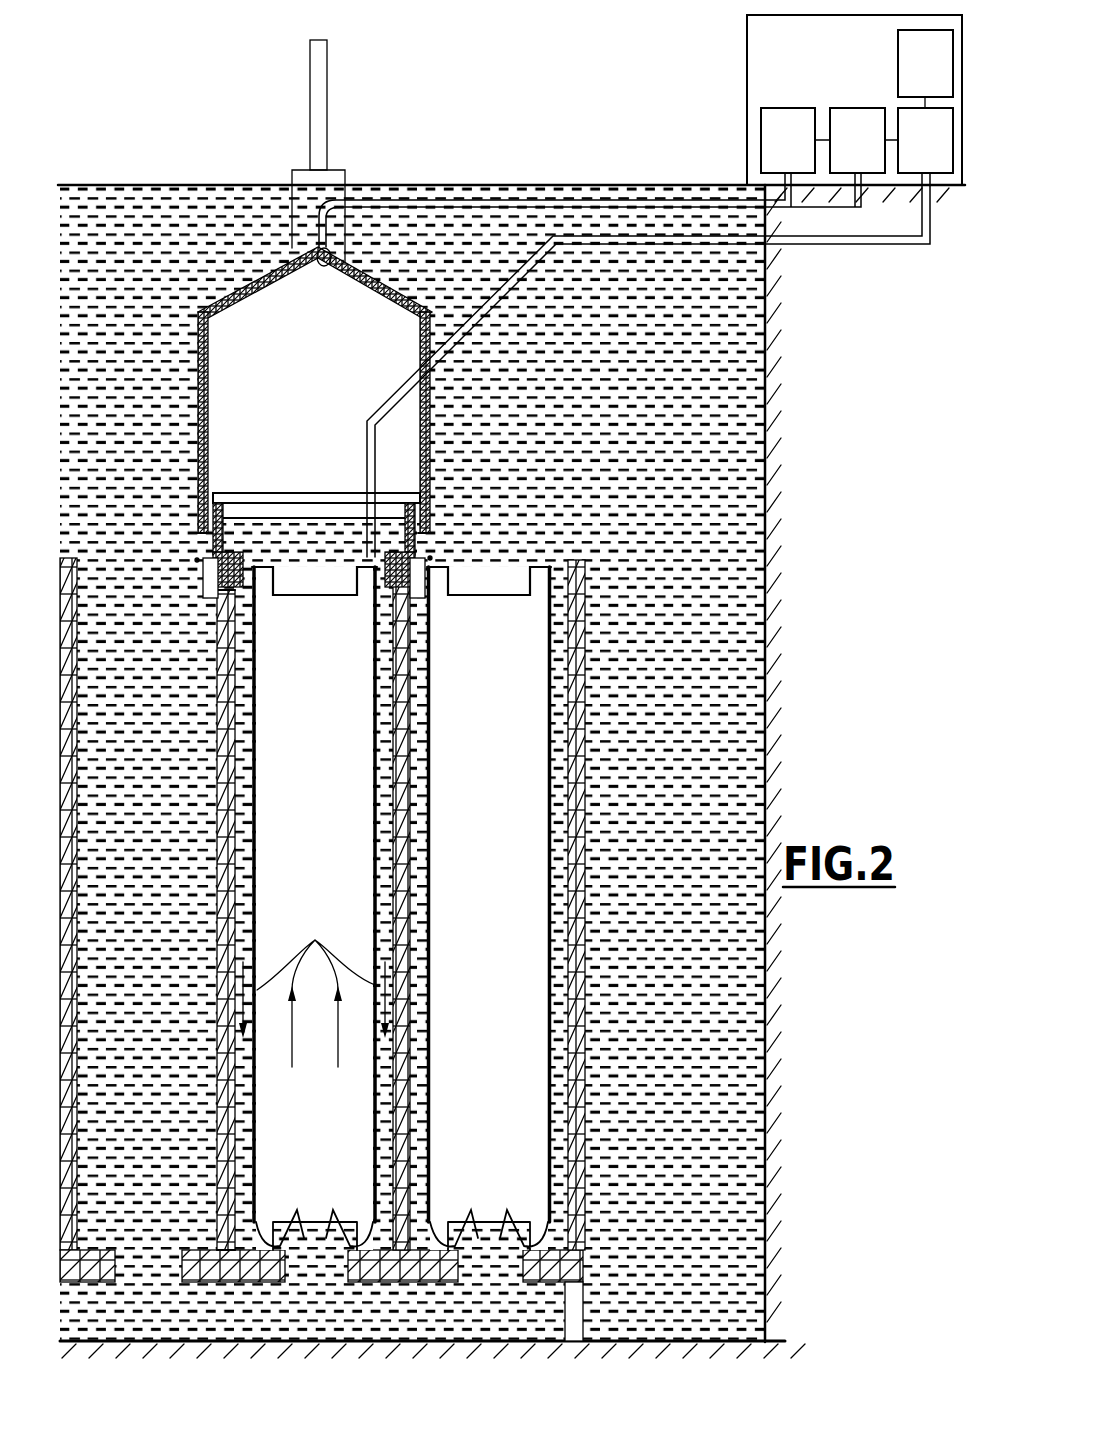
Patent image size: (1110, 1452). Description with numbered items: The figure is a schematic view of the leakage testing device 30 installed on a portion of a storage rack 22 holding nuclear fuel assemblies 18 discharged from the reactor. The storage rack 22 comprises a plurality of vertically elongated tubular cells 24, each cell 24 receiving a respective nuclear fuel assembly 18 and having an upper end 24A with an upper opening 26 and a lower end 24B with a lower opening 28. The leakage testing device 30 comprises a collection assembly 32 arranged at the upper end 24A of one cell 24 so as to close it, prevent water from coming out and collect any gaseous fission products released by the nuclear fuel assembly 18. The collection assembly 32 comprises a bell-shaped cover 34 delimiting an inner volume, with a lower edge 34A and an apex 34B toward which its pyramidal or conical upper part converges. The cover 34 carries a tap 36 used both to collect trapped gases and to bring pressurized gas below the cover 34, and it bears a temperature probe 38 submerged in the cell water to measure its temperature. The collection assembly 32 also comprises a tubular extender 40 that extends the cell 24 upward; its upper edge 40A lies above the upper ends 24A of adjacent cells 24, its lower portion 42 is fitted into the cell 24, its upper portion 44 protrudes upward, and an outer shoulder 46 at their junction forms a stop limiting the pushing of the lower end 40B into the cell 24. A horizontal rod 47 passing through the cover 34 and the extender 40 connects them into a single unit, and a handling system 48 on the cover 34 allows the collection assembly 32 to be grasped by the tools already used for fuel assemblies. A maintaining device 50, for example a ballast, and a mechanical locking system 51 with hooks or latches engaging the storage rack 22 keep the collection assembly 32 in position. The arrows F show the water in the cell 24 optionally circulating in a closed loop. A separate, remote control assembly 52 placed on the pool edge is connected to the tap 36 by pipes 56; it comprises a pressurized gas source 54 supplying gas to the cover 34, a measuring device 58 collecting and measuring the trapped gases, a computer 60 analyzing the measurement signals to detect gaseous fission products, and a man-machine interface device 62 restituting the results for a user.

The nuclear fuel assembly 18 is at (258, 1050).
The storage rack 22 is at (608, 1202).
The tubular cell 24 is at (225, 716).
The upper end 24A is at (207, 573).
The lower end 24B is at (283, 1262).
The upper opening 26 is at (305, 552).
The lower opening 28 is at (295, 1262).
The leakage testing device 30 is at (353, 291).
The collection assembly 32 is at (210, 268).
The cover 34 is at (245, 285).
The lower edge 34A is at (428, 543).
The apex 34B is at (290, 257).
The tap 36 is at (343, 262).
The temperature probe 38 is at (372, 432).
The tubular extender 40 is at (422, 462).
The upper edge 40A is at (307, 493).
The lower end 40B is at (423, 565).
The lower portion 42 is at (203, 585).
The upper portion 44 is at (205, 502).
The outer shoulder 46 is at (200, 560).
The horizontal rod 47 is at (380, 530).
The handling system 48 is at (290, 176).
The maintaining device 50 is at (193, 558).
The mechanical locking system 51 is at (203, 608).
The control assembly 52 is at (778, 100).
The pressurized gas source 54 is at (797, 158).
The pipe 56 is at (603, 200).
The measuring device 58 is at (866, 158).
The computer 60 is at (934, 158).
The man-machine interface device 62 is at (934, 78).
The arrows F is at (316, 1358).